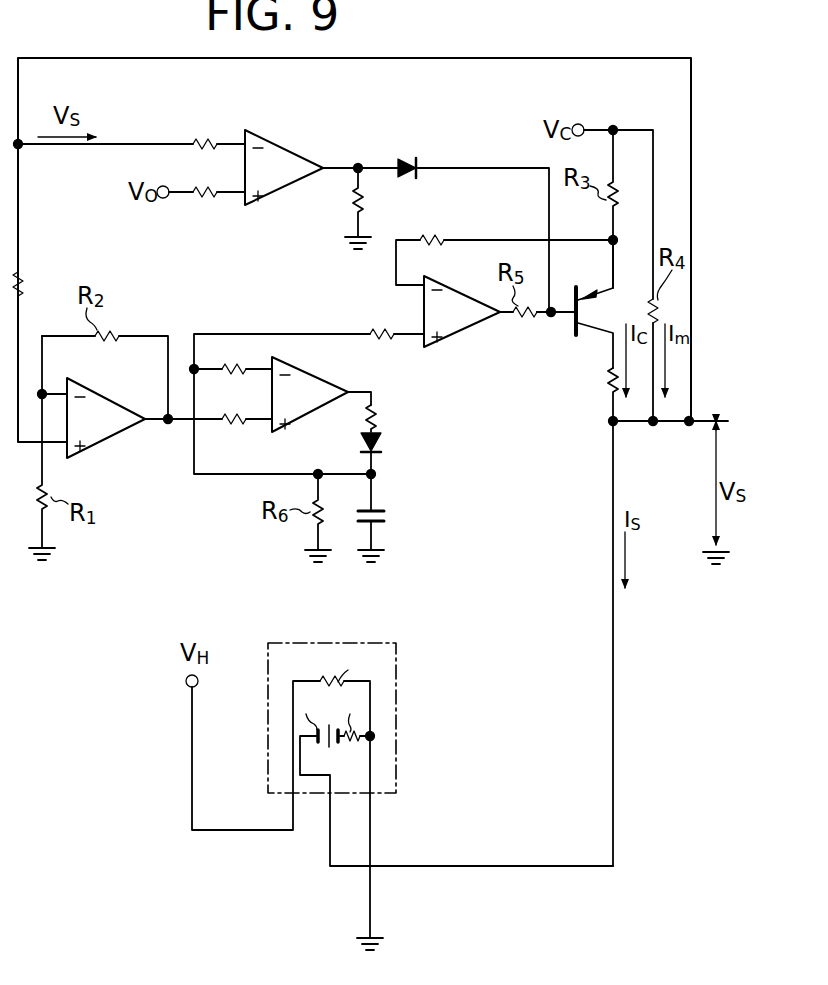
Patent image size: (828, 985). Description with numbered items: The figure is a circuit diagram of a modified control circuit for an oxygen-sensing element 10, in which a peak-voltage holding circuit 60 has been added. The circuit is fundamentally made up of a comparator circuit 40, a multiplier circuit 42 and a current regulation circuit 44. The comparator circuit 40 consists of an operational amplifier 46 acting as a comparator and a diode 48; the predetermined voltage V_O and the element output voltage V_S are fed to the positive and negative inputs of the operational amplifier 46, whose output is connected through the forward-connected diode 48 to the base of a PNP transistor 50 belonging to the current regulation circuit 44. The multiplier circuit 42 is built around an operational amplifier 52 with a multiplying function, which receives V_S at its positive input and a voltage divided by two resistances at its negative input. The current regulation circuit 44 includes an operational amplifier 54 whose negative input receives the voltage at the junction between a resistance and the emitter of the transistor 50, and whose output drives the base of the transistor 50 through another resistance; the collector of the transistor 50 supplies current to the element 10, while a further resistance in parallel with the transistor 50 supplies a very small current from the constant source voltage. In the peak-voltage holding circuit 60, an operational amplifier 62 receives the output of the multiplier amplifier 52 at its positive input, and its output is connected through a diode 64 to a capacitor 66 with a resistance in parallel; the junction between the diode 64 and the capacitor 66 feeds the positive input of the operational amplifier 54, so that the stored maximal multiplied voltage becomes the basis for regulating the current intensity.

The oxygen-sensing element 10 is at (396, 686).
The comparator circuit 40 is at (329, 176).
The multiplier circuit 42 is at (104, 480).
The current regulation circuit 44 is at (516, 332).
The operational amplifier 46 is at (279, 133).
The diode 48 is at (410, 158).
The PNP transistor 50 is at (574, 329).
The operational amplifier 52 is at (116, 445).
The operational amplifier 54 is at (466, 333).
The peak-voltage holding circuit 60 is at (370, 382).
The operational amplifier 62 is at (325, 387).
The diode 64 is at (383, 441).
The capacitor 66 is at (384, 509).